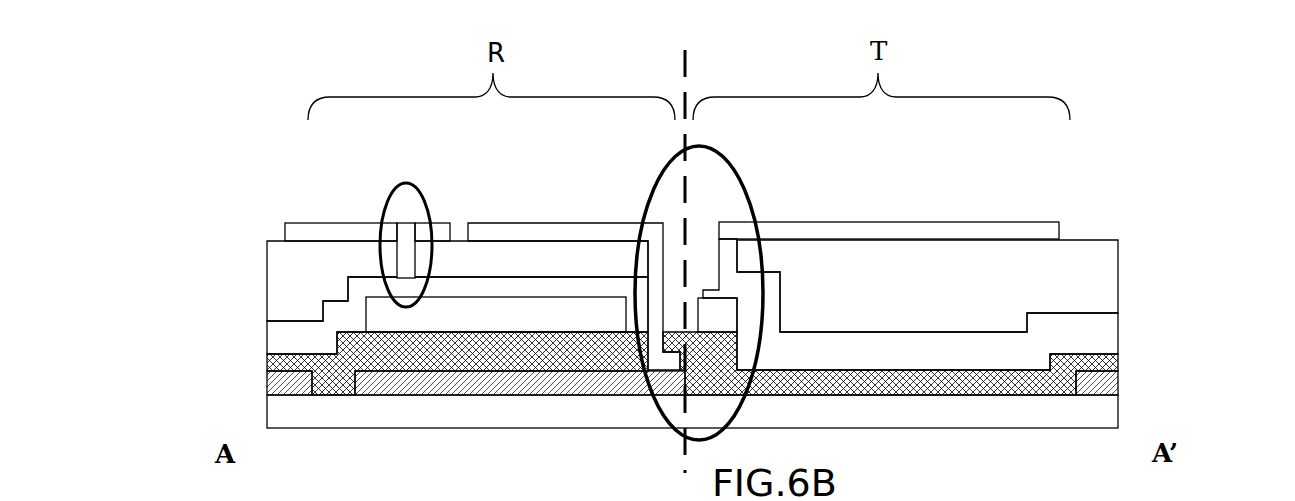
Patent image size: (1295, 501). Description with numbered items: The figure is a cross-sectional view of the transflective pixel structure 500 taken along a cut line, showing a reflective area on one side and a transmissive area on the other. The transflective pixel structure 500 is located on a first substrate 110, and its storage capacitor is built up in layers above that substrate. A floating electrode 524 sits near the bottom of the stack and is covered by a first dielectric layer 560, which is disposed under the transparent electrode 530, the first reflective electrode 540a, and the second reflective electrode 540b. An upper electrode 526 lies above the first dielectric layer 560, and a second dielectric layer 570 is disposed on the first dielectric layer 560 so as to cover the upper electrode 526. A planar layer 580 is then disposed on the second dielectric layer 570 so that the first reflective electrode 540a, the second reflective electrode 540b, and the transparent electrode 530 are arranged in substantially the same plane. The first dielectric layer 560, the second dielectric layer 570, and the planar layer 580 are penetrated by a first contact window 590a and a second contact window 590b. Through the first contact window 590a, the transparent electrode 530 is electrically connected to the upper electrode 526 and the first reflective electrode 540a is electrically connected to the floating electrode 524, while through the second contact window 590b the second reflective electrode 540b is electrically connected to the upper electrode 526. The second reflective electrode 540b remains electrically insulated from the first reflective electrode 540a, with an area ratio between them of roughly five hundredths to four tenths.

The transflective pixel structure 500 is at (1091, 141).
The first substrate 110 is at (350, 415).
The floating electrode 524 is at (405, 385).
The upper electrode 526 is at (435, 320).
The transparent electrode 530 is at (1018, 230).
The first reflective electrode 540a is at (515, 233).
The second reflective electrode 540b is at (345, 230).
The first dielectric layer 560 is at (1027, 382).
The second dielectric layer 570 is at (1083, 345).
The planar layer 580 is at (1065, 269).
The first contact window 590a is at (745, 200).
The second contact window 590b is at (458, 168).